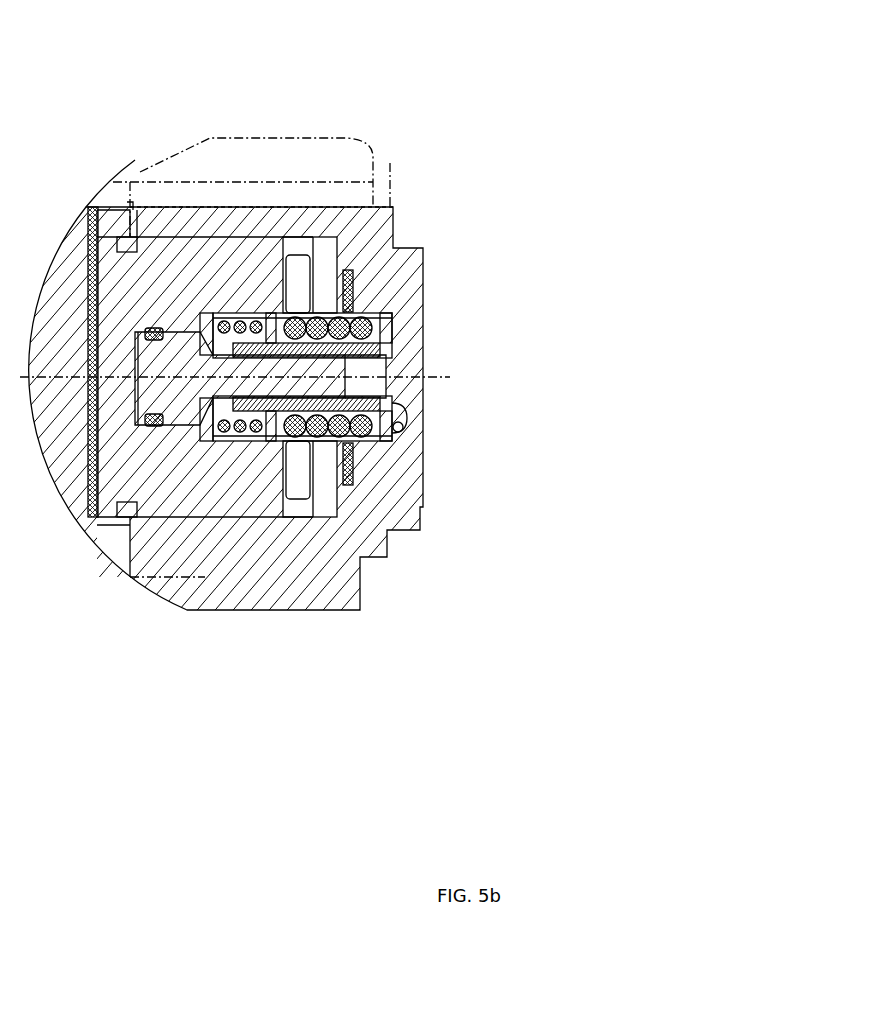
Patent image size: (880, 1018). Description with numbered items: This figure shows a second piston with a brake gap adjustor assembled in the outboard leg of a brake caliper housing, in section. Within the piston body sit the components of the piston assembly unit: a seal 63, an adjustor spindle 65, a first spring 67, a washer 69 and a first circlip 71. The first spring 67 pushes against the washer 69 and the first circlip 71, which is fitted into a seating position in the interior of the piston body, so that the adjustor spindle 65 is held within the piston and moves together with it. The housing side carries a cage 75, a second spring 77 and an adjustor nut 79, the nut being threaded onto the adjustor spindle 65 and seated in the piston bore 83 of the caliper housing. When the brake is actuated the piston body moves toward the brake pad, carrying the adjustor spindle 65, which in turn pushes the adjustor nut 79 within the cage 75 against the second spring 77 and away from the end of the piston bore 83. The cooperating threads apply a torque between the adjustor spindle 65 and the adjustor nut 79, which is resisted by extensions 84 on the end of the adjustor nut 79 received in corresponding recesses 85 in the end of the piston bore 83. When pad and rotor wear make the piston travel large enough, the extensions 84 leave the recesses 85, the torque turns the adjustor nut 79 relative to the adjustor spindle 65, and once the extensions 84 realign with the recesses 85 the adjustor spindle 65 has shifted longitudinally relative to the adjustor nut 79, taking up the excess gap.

The seal 63 is at (158, 330).
The adjustor spindle 65 is at (211, 325).
The first spring 67 is at (252, 327).
The washer 69 is at (217, 430).
The first circlip 71 is at (267, 440).
The cage 75 is at (390, 317).
The second spring 77 is at (365, 315).
The adjustor nut 79 is at (392, 434).
The piston bore 83 is at (392, 362).
The extensions 84 is at (397, 413).
The recesses 85 is at (410, 426).